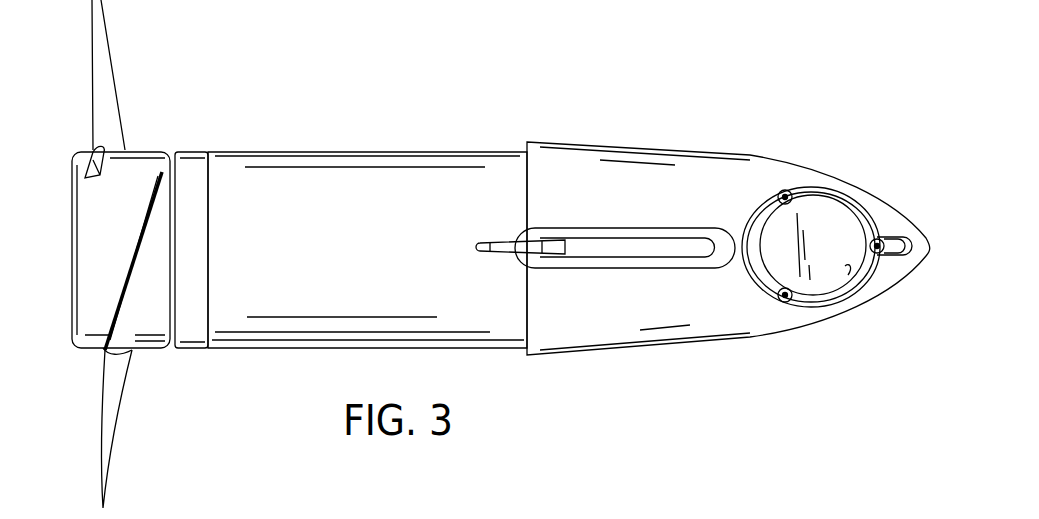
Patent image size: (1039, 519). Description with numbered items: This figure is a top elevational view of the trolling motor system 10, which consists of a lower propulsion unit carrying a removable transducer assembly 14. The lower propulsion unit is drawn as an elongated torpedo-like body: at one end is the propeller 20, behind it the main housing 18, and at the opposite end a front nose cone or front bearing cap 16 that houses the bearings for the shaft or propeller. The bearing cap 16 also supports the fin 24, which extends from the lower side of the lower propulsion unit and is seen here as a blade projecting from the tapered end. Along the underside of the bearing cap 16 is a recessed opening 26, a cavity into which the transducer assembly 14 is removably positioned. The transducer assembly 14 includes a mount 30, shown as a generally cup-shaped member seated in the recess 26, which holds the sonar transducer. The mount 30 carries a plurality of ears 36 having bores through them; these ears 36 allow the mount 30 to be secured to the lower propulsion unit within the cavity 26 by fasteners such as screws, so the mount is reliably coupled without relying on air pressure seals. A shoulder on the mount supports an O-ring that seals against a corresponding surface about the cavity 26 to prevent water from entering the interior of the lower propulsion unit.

The trolling motor system 10 is at (769, 83).
The transducer assembly 14 is at (805, 300).
The front bearing cap 16 is at (637, 143).
The main housing 18 is at (264, 150).
The propeller 20 is at (115, 83).
The fin 24 is at (568, 246).
The recessed opening 26 is at (852, 270).
The mount 30 is at (843, 215).
The ears 36 is at (784, 192).